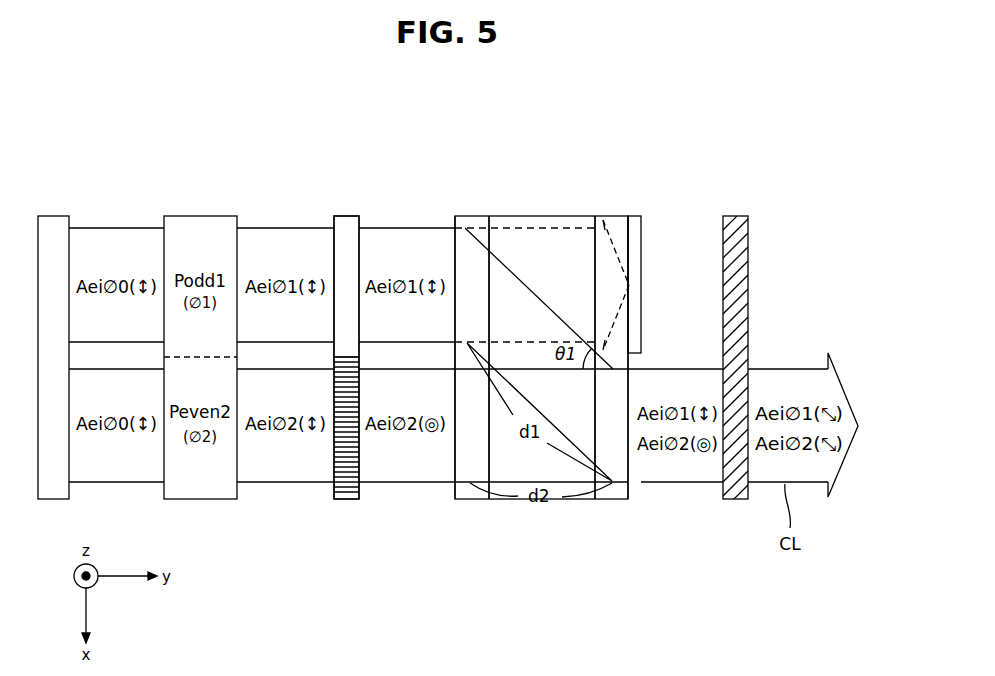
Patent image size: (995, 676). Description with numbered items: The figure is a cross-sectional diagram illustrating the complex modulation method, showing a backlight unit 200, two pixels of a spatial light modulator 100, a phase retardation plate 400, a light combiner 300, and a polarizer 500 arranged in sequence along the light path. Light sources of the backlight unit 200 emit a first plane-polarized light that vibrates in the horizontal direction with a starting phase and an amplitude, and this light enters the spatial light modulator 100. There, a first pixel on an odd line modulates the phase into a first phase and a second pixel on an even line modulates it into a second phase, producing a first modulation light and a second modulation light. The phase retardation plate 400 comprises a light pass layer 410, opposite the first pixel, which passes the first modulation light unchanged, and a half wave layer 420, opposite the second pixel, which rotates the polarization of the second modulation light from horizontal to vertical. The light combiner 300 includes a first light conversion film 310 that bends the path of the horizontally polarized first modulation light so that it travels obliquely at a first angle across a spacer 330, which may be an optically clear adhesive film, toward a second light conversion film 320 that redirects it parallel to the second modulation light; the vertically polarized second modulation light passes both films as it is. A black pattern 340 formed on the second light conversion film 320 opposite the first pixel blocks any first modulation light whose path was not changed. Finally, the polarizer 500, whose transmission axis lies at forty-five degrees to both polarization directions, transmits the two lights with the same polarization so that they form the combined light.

The spatial light modulator 100 is at (200, 218).
The backlight unit 200 is at (52, 218).
The light combiner 300 is at (677, 148).
The first light conversion film 310 is at (471, 218).
The second light conversion film 320 is at (610, 218).
The spacer 330 is at (540, 218).
The black pattern 340 is at (637, 218).
The phase retardation plate 400 is at (348, 218).
The light pass layer 410 is at (345, 218).
The half wave layer 420 is at (351, 499).
The polarizer 500 is at (733, 218).